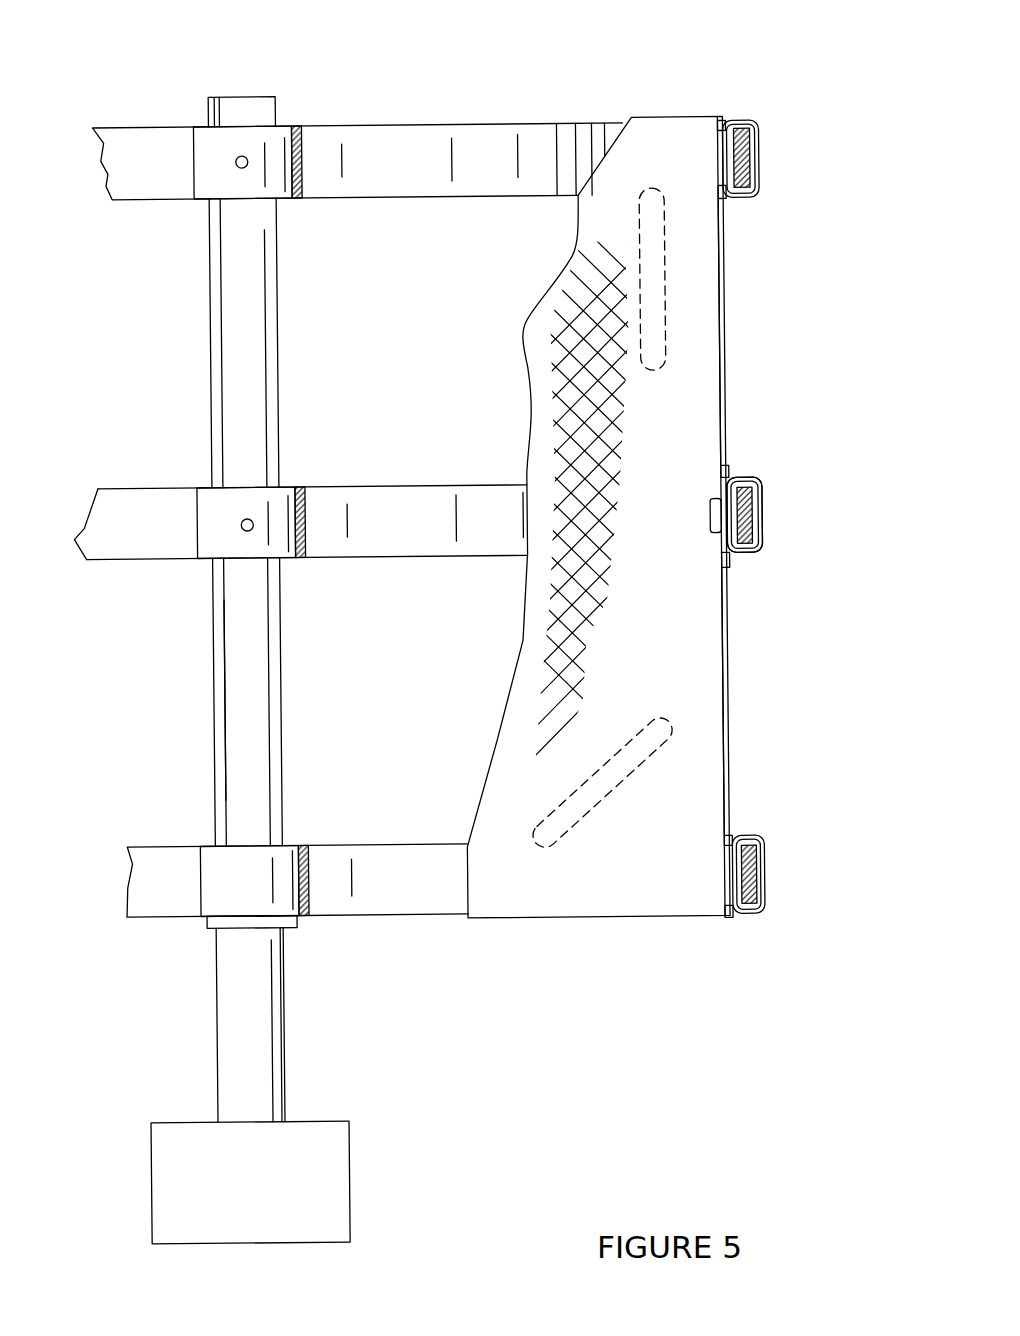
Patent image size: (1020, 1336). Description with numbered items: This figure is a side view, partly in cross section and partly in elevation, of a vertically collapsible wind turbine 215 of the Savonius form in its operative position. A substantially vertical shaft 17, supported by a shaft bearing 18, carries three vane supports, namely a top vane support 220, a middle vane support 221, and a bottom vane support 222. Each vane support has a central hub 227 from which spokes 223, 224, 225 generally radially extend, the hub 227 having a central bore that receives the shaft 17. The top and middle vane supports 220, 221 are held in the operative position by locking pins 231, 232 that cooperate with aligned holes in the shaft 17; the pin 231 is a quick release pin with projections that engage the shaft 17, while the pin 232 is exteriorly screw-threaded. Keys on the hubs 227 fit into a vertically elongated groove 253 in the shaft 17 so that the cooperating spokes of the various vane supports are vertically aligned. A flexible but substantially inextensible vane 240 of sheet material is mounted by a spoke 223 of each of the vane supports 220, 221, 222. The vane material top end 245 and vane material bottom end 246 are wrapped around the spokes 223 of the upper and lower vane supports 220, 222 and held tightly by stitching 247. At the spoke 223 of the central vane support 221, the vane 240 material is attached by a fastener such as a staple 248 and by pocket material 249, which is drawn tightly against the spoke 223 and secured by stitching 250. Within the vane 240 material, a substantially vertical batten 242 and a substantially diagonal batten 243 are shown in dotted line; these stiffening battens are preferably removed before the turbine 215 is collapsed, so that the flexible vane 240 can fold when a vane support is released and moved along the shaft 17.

The vertically collapsible wind turbine 215 is at (727, 48).
The wind turbine shaft 17 is at (238, 270).
The shaft bearing 18 is at (333, 1155).
The top vane support 220 is at (374, 113).
The middle vane support 221 is at (325, 470).
The bottom vane support 222 is at (335, 822).
The spoke 223 is at (750, 135).
The spoke 224 is at (305, 540).
The spoke 225 is at (92, 523).
The vane support hub 227 is at (210, 145).
The locking pin 231 is at (237, 167).
The locking pin 232 is at (245, 530).
The vane 240 is at (780, 370).
The vertical batten 242 is at (643, 343).
The diagonal batten 243 is at (610, 750).
The vane material top end 245 is at (722, 185).
The vane material bottom end 246 is at (728, 825).
The stitching 247 is at (720, 193).
The fastener (staple) 248 is at (713, 503).
The pocket material 249 is at (765, 486).
The stitching 250 is at (722, 466).
The shaft groove 253 is at (226, 740).